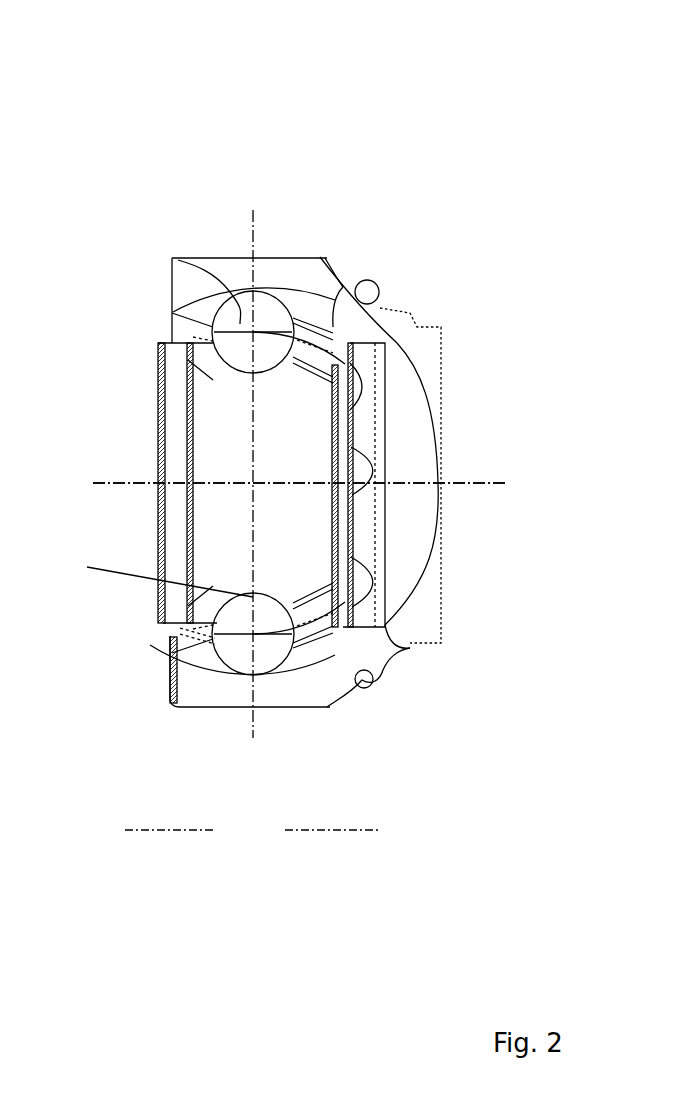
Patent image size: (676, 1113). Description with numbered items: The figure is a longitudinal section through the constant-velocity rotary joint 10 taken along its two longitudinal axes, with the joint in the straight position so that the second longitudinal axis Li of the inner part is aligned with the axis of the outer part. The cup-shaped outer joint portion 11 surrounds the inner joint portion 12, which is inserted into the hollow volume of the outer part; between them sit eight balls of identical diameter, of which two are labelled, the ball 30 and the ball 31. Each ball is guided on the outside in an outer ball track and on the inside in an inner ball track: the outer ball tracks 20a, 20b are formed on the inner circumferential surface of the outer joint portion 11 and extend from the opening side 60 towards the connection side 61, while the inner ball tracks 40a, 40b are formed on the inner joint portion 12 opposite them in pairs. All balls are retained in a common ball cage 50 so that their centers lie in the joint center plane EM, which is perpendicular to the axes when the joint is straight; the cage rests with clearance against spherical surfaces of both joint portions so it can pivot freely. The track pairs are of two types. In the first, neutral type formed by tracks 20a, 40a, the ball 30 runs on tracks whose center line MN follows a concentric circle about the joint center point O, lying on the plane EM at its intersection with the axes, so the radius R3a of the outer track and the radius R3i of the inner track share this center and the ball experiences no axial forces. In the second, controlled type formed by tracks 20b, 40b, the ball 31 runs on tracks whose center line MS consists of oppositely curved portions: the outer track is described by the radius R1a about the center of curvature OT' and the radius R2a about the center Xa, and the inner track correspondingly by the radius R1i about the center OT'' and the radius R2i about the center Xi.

The constant-velocity rotary joint 10 is at (210, 143).
The outer joint portion 11 is at (283, 258).
The inner joint portion 12 is at (190, 412).
The outer ball track 20a is at (345, 282).
The outer ball track 20b is at (214, 707).
The ball 30 is at (178, 258).
The ball 31 is at (290, 708).
The inner ball track 40a is at (304, 400).
The inner ball track 40b is at (313, 607).
The ball cage 50 is at (160, 370).
The opening side 60 is at (163, 650).
The connection side 61 is at (435, 367).
The joint center plane EM is at (250, 237).
The center line MN is at (385, 308).
The center line MS is at (368, 678).
The second longitudinal axis Li is at (480, 483).
The joint center point O is at (238, 409).
The center of curvature OT' is at (217, 459).
The center of curvature OT'' is at (297, 507).
The radius of the inner ball track R3i is at (290, 625).
The radius of the outer ball track R3a is at (253, 483).
The radius R1i is at (273, 483).
The radius R1a is at (236, 483).
The radius R2a is at (205, 595).
The radius R2i is at (312, 600).
The center of curvature Xa is at (173, 830).
The center of curvature Xi is at (330, 830).